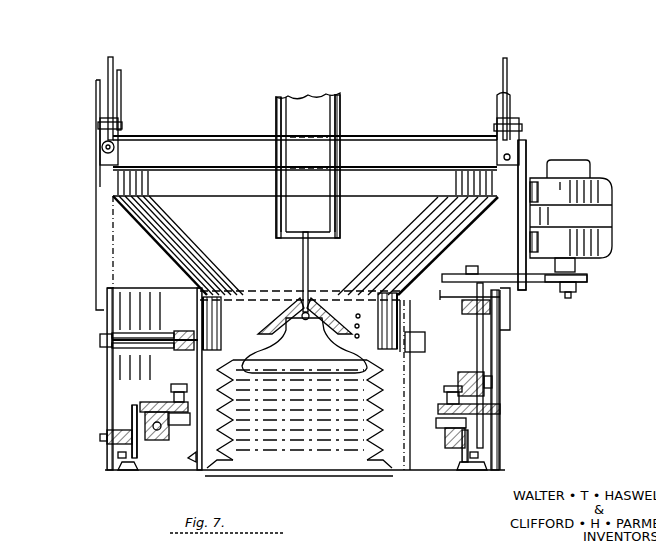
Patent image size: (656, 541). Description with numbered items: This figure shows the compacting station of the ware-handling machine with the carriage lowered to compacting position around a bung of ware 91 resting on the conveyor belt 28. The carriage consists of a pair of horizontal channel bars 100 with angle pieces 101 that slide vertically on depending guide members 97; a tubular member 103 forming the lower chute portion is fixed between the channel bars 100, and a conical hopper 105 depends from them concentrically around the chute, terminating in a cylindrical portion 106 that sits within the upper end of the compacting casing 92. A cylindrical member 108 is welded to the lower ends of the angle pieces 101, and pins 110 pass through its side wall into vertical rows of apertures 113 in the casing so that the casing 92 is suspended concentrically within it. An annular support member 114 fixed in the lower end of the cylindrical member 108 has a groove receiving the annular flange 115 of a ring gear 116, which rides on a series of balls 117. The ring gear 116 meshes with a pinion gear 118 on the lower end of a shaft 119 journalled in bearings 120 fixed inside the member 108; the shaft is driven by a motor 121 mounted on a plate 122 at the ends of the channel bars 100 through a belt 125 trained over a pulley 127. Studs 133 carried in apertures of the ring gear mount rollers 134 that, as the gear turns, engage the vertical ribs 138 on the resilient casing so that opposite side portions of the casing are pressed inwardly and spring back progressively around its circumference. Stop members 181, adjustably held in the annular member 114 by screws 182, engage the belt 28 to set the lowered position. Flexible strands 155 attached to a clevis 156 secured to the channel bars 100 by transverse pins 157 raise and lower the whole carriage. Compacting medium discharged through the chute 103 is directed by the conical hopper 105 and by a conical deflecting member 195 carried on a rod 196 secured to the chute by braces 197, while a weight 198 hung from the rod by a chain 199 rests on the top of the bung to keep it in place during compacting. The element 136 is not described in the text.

The conveyor belt 28 is at (487, 470).
The bung of ware 91 is at (300, 440).
The compacting casing 92 is at (212, 329).
The guide member 97 is at (96, 90).
The channel bar 100 is at (305, 166).
The angle piece 101 is at (96, 222).
The tubular member 103 is at (340, 95).
The conical hopper 105 is at (165, 247).
The cylindrical portion 106 is at (400, 300).
The cylindrical member 108 is at (500, 345).
The pin 110 is at (102, 342).
The aperture 113 is at (184, 332).
The annular support member 114 is at (152, 440).
The annular flange 115 is at (425, 432).
The ring gear 116 is at (174, 388).
The ball 117 is at (162, 428).
The pinion gear 118 is at (500, 412).
The shaft 119 is at (484, 330).
The bearing 120 is at (462, 308).
The motor 121 is at (612, 207).
The plate 122 is at (526, 160).
The belt 125 is at (550, 285).
The pulley 127 is at (446, 274).
The stud 133 is at (448, 398).
The roller 134 is at (417, 398).
The coupling 136 is at (585, 276).
The rib 138 is at (184, 395).
The flexible strand 155 is at (113, 62).
The clevis 156 is at (100, 147).
The pin 157 is at (115, 147).
The stop member 181 is at (118, 466).
The screw 182 is at (118, 455).
The conical deflecting member 195 is at (328, 316).
The rod 196 is at (308, 250).
The brace 197 is at (296, 232).
The weight 198 is at (304, 345).
The chain 199 is at (302, 312).